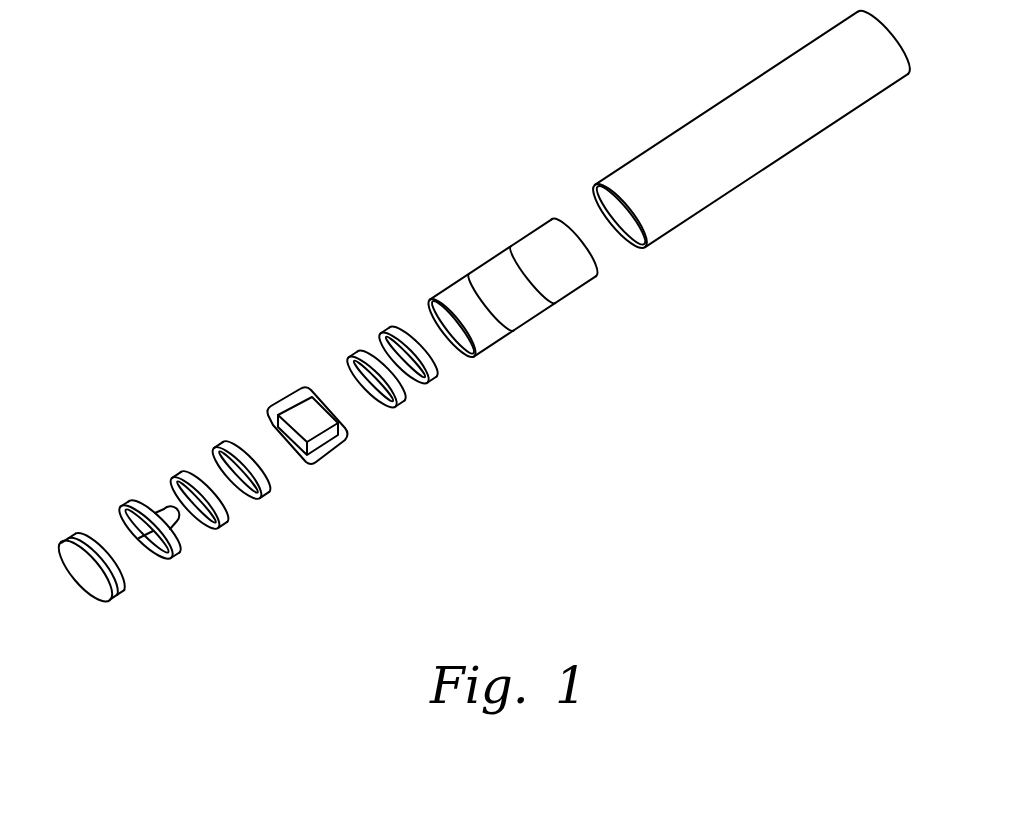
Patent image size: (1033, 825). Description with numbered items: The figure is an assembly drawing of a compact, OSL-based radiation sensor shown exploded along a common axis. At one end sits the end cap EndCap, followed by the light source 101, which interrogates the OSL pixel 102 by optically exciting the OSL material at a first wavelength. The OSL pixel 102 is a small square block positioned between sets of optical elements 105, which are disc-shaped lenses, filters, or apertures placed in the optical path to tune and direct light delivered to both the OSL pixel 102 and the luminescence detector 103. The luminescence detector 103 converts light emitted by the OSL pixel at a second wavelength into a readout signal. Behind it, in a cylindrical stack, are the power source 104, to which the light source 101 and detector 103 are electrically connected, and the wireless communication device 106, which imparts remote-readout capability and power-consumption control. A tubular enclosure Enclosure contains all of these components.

The light source 101 is at (162, 512).
The OSL pixel 102 is at (295, 412).
The luminescence detector 103 is at (509, 266).
The power source 104 is at (495, 270).
The optical elements 105 is at (222, 520).
The wireless communication device 106 is at (548, 237).
The end cap EndCap is at (120, 592).
The enclosure Enclosure is at (718, 178).